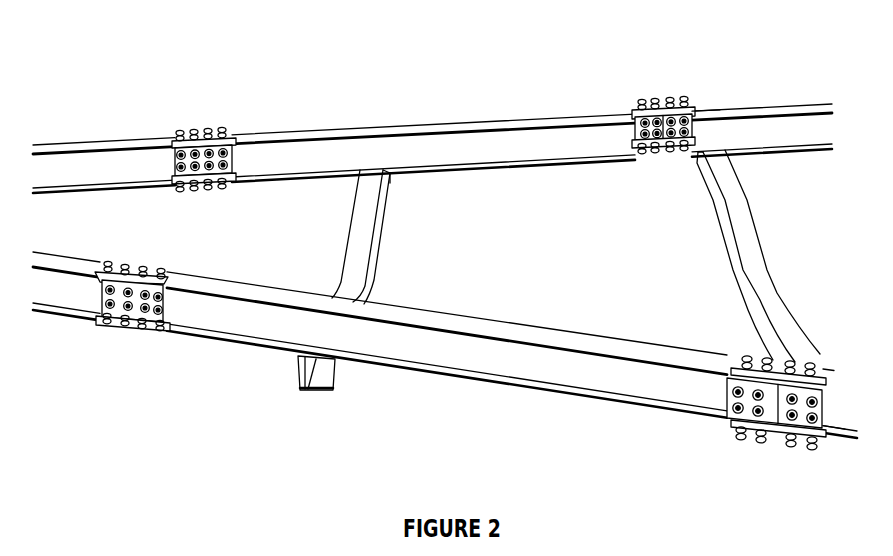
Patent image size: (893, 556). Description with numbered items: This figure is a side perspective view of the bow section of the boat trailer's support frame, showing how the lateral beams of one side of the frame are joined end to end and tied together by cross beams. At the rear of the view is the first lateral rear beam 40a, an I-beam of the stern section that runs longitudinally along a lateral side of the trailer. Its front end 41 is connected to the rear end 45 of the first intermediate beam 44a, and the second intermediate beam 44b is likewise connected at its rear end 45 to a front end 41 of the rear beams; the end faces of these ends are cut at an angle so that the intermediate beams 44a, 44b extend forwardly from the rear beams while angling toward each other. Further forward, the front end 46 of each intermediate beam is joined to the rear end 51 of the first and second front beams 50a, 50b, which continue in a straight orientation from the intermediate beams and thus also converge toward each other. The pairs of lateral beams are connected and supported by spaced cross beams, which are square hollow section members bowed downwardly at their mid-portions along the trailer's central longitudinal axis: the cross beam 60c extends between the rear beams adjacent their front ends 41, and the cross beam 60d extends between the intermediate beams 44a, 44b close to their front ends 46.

The first lateral rear beam 40a is at (775, 128).
The front end of rear beam 41 is at (707, 125).
The first intermediate beam 44a is at (450, 142).
The second intermediate beam 44b is at (523, 372).
The rear end of intermediate beam 45 is at (618, 127).
The front end of intermediate beam 46 is at (263, 161).
The first front beam 50a is at (83, 170).
The second front beam 50b is at (58, 293).
The rear end of front beam 51 is at (151, 160).
The cross beam 60c is at (744, 239).
The cross beam 60d is at (352, 260).